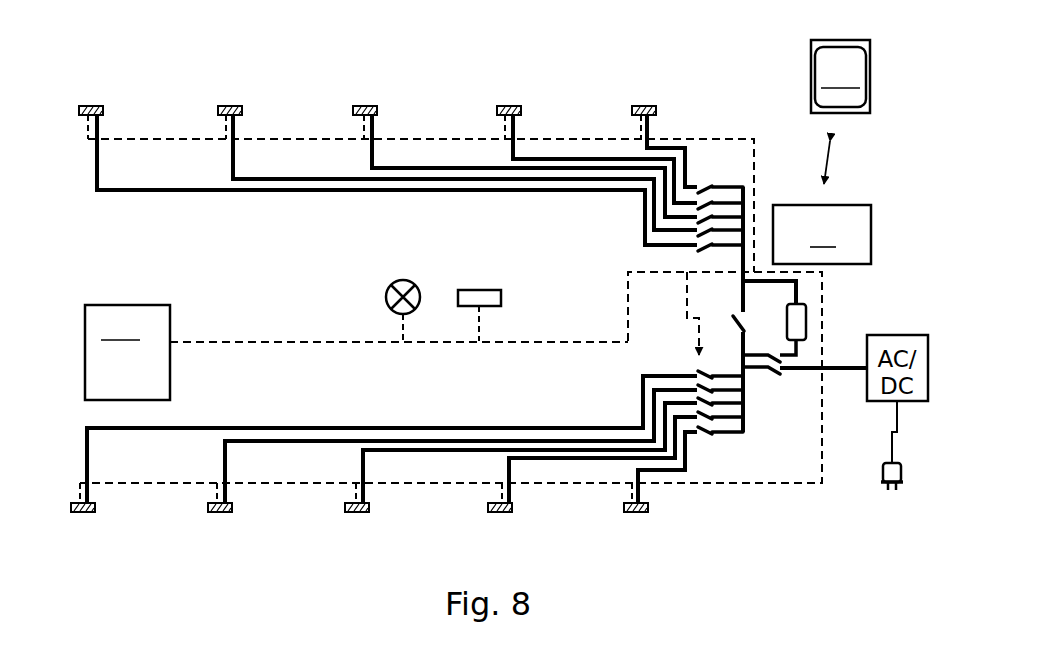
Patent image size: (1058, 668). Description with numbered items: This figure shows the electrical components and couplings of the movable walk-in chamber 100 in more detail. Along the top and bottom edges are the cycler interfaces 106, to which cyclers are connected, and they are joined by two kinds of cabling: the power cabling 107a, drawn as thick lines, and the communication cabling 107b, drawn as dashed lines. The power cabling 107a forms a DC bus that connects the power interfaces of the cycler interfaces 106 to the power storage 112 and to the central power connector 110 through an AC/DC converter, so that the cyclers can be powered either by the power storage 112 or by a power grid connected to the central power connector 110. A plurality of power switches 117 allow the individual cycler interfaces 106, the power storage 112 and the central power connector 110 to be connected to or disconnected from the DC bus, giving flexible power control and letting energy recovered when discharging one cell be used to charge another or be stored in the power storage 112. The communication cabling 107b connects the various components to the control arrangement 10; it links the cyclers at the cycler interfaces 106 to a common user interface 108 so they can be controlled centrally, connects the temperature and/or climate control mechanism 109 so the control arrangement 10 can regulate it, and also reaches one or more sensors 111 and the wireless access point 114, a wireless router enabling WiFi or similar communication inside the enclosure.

The movable walk-in chamber 100 is at (611, 82).
The control arrangement 10 is at (822, 202).
The user interface 108 is at (840, 76).
The temperature and/or climate control mechanism 109 is at (127, 352).
The sensor 111 is at (385, 289).
The wireless access point 114 is at (485, 290).
The power storage 112 is at (811, 320).
The power switch 117 is at (710, 437).
The power cabling 107a is at (134, 194).
The communication cabling 107b is at (727, 487).
The cycler interface 106 is at (651, 509).
The central power connector 110 is at (893, 499).